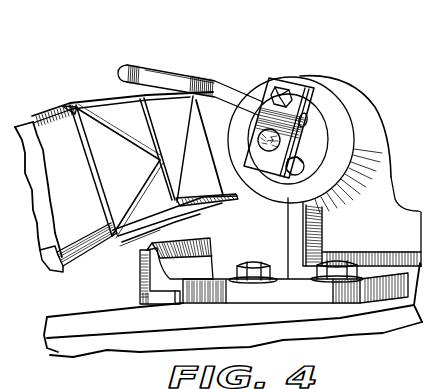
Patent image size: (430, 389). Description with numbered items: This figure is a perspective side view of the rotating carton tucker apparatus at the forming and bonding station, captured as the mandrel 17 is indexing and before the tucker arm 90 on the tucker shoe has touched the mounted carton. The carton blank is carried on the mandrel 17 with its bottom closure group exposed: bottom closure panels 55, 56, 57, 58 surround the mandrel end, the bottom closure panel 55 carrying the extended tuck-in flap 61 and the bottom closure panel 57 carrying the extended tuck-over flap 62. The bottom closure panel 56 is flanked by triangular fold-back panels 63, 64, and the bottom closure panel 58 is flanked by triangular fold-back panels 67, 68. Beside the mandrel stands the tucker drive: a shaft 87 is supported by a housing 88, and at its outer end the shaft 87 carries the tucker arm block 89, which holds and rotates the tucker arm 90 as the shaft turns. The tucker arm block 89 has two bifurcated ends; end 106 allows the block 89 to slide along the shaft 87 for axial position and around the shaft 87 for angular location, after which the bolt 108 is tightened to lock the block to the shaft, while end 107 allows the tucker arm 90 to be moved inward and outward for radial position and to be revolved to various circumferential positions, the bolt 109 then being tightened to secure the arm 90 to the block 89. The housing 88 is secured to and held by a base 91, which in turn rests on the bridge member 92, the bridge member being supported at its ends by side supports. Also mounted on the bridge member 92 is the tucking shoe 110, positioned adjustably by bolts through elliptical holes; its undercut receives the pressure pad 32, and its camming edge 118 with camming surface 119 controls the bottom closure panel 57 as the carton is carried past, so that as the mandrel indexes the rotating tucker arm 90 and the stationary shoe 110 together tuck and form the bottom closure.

The mandrel 17 is at (43, 268).
The pressure pad 32 is at (160, 298).
The bottom closure panel 55 is at (174, 97).
The bottom closure panel 56 is at (170, 152).
The bottom closure panel 57 is at (173, 217).
The bottom closure panel 58 is at (93, 128).
The tuck-in flap 61 is at (173, 99).
The tuck-over flap 62 is at (230, 203).
The triangular fold-back panel 63 is at (168, 124).
The triangular fold-back panel 64 is at (200, 184).
The triangular fold-back panel 67 is at (140, 212).
The triangular fold-back panel 68 is at (108, 112).
The shaft 87 is at (280, 141).
The housing 88 is at (346, 86).
The tucker arm block 89 is at (266, 80).
The tucker arm 90 is at (195, 74).
The base 91 is at (290, 240).
The bridge member 92 is at (107, 343).
The bifurcated end 106 is at (273, 175).
The bifurcated end 107 is at (308, 102).
The bolt 108 is at (336, 190).
The bolt 109 is at (284, 88).
The tucking shoe 110 is at (248, 309).
The camming edge 118 is at (142, 268).
The camming surface 119 is at (144, 254).